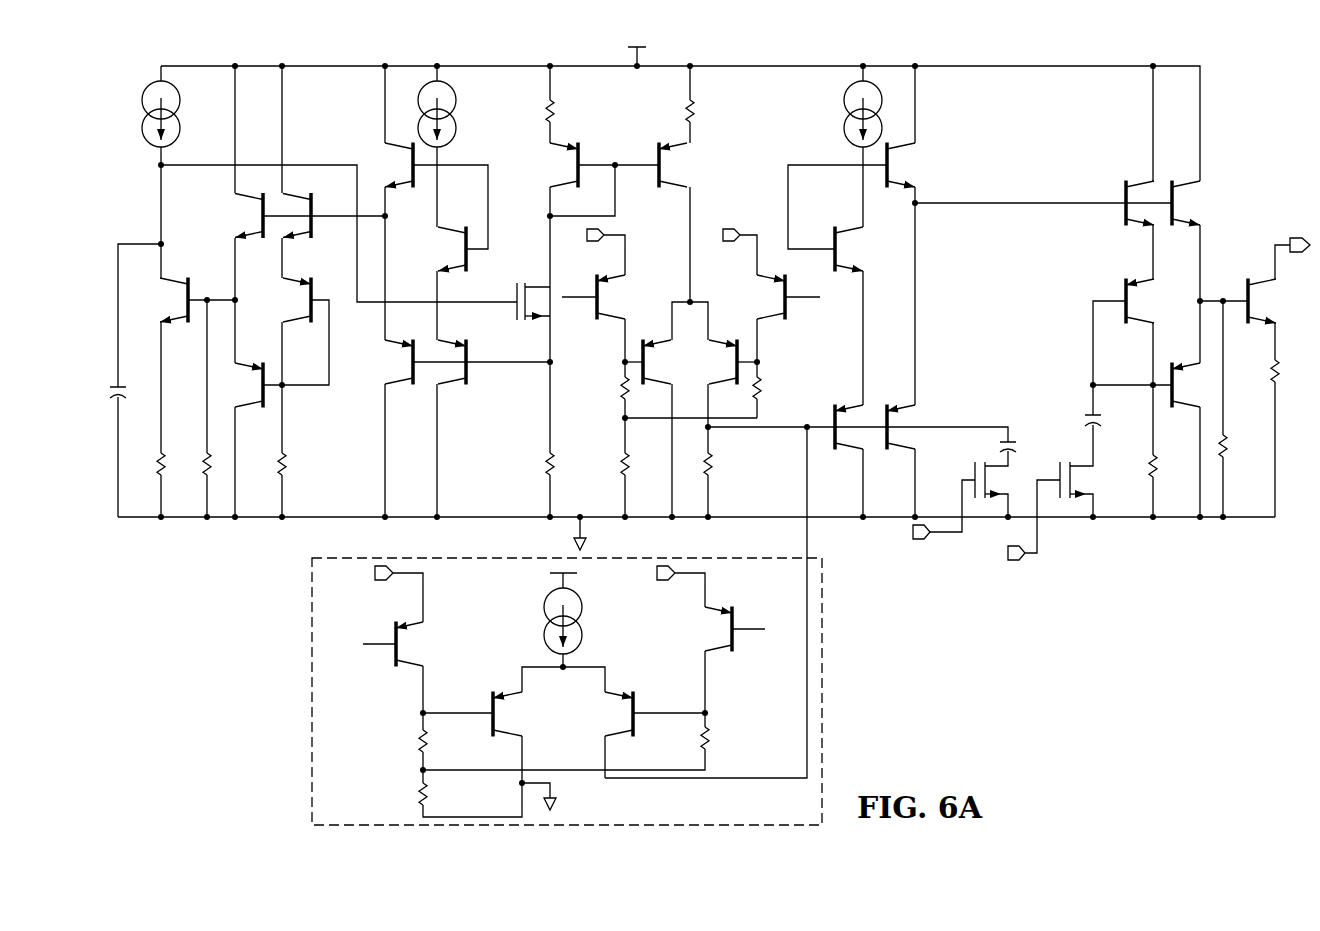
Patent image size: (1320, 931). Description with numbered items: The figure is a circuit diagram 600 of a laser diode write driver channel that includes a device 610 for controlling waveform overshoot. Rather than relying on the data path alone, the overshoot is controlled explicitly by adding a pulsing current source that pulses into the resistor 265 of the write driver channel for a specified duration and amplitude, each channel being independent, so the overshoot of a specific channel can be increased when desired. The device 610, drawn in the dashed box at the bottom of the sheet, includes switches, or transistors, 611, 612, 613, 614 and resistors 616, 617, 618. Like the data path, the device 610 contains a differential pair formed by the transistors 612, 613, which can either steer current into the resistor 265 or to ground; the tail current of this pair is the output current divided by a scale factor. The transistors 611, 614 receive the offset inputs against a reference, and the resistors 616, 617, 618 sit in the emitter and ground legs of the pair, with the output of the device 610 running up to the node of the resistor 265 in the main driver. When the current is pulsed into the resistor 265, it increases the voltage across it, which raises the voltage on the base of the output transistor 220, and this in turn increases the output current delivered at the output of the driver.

The circuit diagram 600 is at (710, 435).
The device for controlling overshoot 610 is at (310, 728).
The transistor 611 is at (392, 629).
The transistor 612 is at (490, 699).
The transistor 613 is at (637, 699).
The transistor 614 is at (736, 614).
The resistor 616 is at (418, 740).
The resistor 617 is at (418, 792).
The resistor 618 is at (700, 740).
The resistor 265 is at (712, 467).
The output transistor 220 is at (1240, 311).